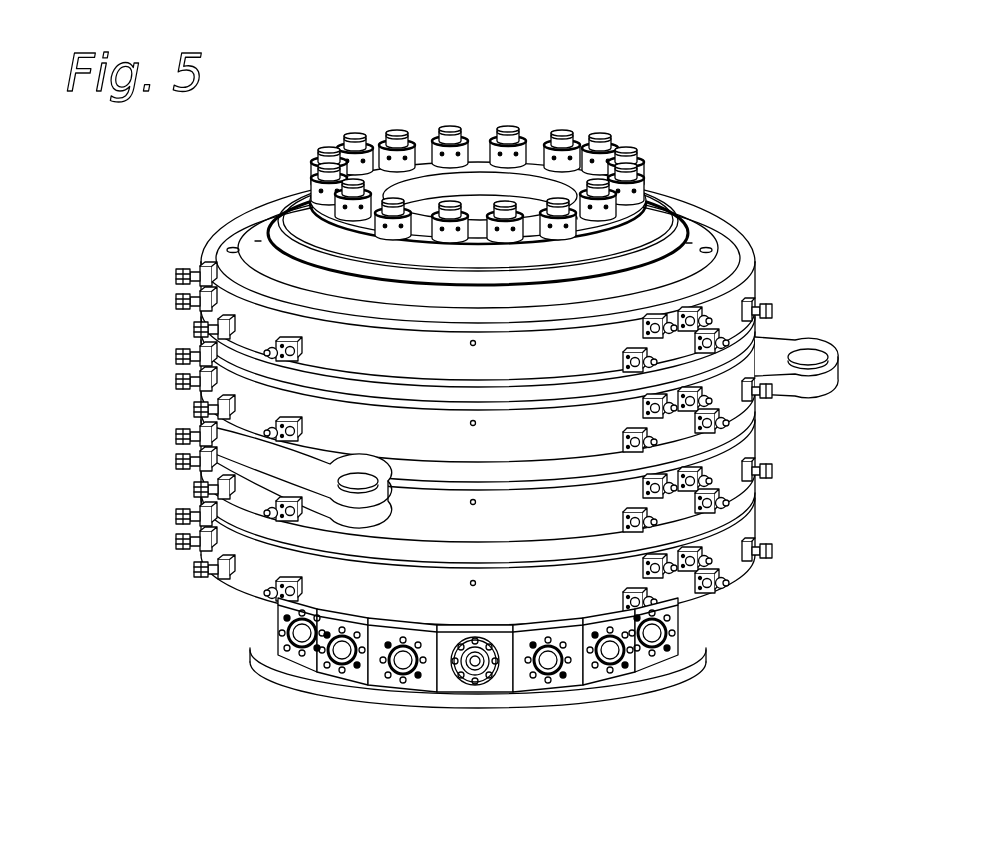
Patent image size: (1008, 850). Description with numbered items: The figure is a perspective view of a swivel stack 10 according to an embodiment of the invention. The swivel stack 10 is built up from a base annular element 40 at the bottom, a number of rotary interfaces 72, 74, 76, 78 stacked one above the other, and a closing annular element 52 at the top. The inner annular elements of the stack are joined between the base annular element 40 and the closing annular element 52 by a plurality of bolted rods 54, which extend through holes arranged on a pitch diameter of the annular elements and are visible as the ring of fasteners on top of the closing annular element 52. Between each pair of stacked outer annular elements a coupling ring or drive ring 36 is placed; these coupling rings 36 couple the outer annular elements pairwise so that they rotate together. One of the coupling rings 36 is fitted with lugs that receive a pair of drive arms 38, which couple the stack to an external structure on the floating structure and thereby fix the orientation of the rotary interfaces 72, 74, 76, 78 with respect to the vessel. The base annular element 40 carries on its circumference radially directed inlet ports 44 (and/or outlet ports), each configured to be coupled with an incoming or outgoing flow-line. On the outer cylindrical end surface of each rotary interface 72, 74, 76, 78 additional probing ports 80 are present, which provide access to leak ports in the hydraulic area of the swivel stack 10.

The swivel stack 10 is at (626, 82).
The coupling ring 36 is at (243, 362).
The drive arm 38 is at (780, 347).
The base annular element 40 is at (445, 688).
The inlet port 44 is at (340, 650).
The closing annular element 52 is at (650, 198).
The bolted rod 54 is at (600, 138).
The rotary interface 72 is at (247, 575).
The rotary interface 74 is at (538, 536).
The rotary interface 76 is at (538, 456).
The rotary interface 78 is at (538, 376).
The probing port 80 is at (772, 309).